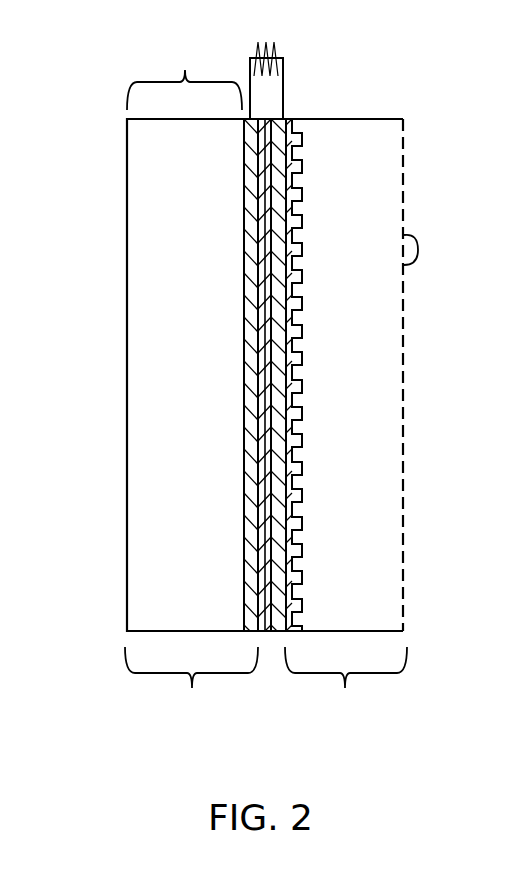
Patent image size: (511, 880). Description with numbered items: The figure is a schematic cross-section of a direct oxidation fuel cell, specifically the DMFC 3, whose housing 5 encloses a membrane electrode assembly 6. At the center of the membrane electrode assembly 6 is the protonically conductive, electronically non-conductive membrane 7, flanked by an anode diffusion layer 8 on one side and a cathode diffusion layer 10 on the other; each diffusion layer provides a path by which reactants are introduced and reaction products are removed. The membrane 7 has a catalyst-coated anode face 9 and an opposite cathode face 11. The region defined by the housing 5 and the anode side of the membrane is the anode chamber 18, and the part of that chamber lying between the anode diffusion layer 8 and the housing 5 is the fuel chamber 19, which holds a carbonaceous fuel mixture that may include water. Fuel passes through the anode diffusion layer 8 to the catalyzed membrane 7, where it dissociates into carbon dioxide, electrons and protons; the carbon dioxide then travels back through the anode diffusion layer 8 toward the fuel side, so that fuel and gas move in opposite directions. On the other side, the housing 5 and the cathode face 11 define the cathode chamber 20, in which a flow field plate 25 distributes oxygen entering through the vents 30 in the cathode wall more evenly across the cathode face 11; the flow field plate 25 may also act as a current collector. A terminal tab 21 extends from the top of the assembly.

The direct methanol fuel cell 3 is at (114, 386).
The housing 5 is at (406, 402).
The membrane electrode assembly 6 is at (229, 221).
The protonically conductive membrane 7 is at (265, 631).
The anode diffusion layer 8 is at (245, 575).
The anode face 9 is at (248, 450).
The cathode diffusion layer 10 is at (292, 570).
The cathode face 11 is at (272, 304).
The anode chamber 18 is at (191, 686).
The fuel chamber 19 is at (184, 74).
The cathode chamber 20 is at (346, 686).
The terminal tab 21 is at (276, 52).
The flow field plate 25 is at (302, 172).
The vents 30 is at (418, 250).